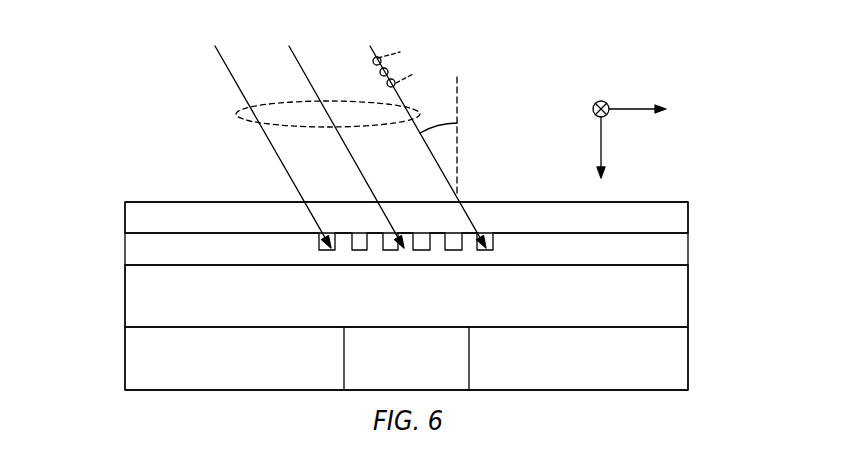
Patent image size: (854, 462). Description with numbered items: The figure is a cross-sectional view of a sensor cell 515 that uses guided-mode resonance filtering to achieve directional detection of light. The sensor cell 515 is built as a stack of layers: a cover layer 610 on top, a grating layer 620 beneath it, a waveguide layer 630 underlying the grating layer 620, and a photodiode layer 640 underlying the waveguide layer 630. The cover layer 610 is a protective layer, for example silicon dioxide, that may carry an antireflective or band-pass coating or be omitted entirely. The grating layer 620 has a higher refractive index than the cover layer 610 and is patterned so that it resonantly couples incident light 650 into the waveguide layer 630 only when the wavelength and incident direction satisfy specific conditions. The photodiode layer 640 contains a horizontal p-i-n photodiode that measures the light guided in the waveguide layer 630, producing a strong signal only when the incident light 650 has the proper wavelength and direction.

The sensor cell 515 is at (566, 73).
The cover layer 610 is at (125, 220).
The grating layer 620 is at (125, 248).
The waveguide layer 630 is at (475, 306).
The photodiode layer 640 is at (125, 360).
The incident light 650 is at (240, 112).